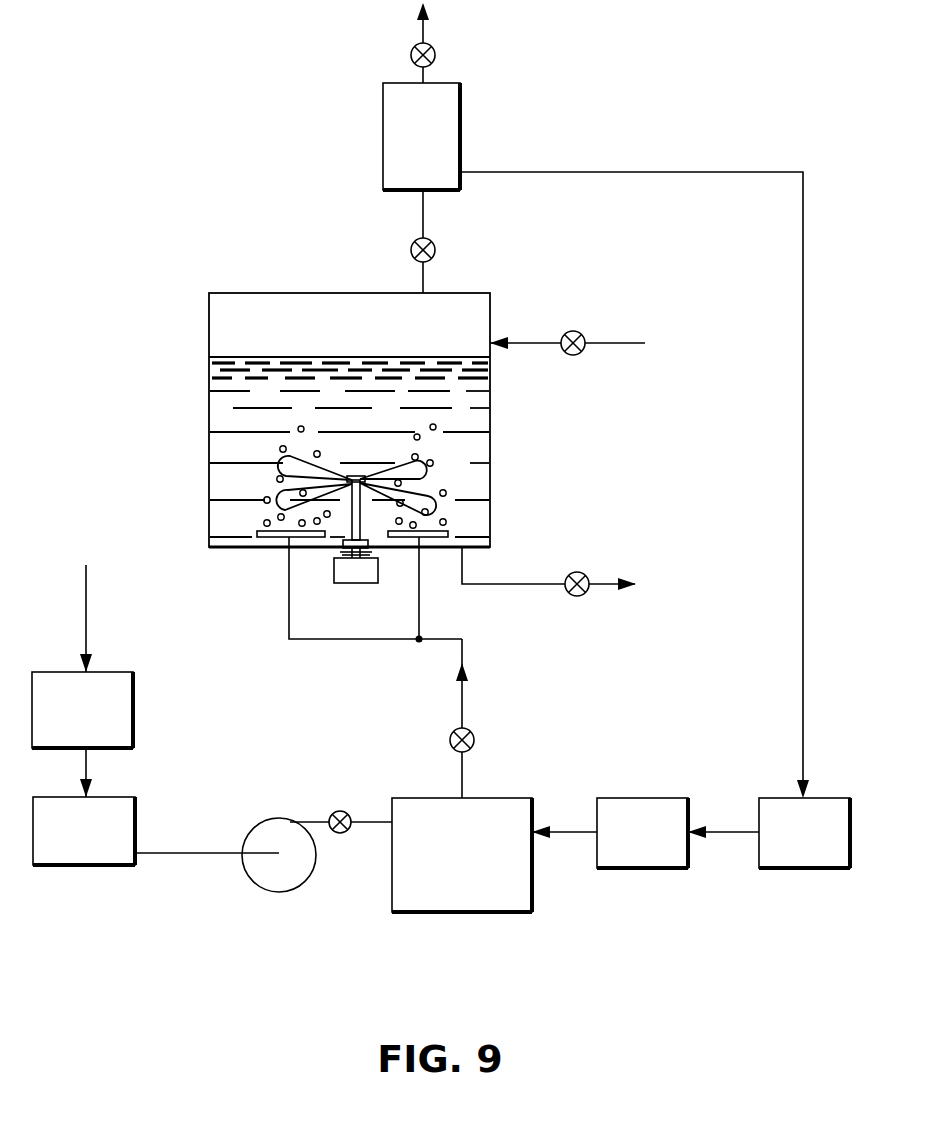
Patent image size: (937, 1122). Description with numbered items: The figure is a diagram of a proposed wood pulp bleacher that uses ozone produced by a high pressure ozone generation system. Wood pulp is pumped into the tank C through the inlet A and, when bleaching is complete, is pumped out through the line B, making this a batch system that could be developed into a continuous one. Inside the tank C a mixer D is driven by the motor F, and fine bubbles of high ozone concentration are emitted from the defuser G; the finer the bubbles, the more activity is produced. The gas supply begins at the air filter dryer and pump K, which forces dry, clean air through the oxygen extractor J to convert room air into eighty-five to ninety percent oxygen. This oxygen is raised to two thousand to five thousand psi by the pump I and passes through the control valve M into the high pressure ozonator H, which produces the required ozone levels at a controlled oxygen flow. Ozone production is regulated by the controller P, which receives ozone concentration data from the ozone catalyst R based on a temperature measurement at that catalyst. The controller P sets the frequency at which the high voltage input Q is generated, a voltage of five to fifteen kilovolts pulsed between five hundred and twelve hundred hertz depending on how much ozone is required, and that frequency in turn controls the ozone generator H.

The ozone catalyst R is at (445, 122).
The tank C is at (228, 408).
The mixer D is at (418, 502).
The defuser G is at (268, 538).
The motor F is at (352, 570).
The inlet A is at (579, 331).
The outlet line B is at (580, 572).
The air filter dryer and pump K is at (123, 720).
The oxygen extractor J is at (123, 832).
The pump I is at (260, 877).
The control valve M is at (336, 814).
The high pressure ozonator H is at (445, 898).
The high voltage input Q is at (637, 855).
The controller P is at (797, 855).